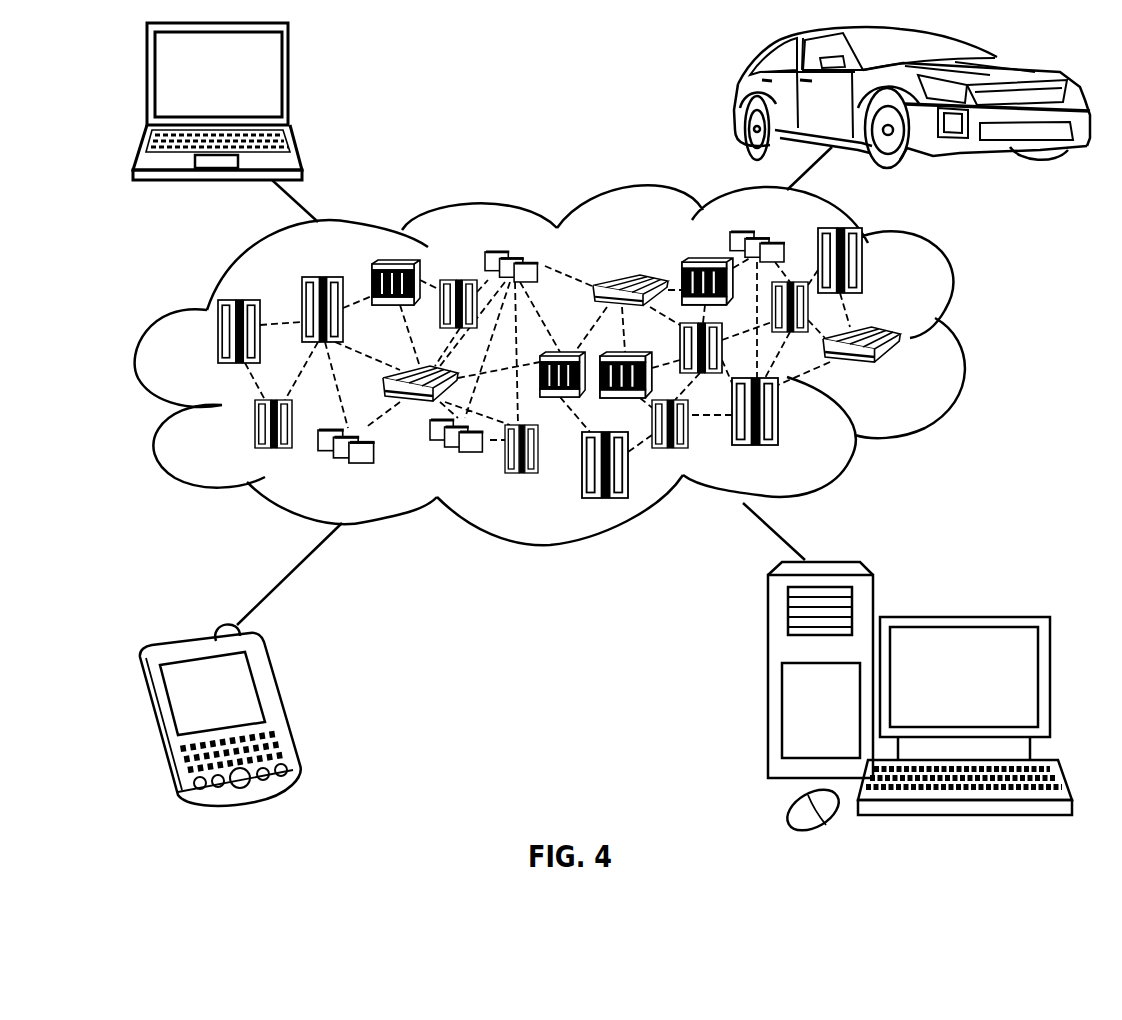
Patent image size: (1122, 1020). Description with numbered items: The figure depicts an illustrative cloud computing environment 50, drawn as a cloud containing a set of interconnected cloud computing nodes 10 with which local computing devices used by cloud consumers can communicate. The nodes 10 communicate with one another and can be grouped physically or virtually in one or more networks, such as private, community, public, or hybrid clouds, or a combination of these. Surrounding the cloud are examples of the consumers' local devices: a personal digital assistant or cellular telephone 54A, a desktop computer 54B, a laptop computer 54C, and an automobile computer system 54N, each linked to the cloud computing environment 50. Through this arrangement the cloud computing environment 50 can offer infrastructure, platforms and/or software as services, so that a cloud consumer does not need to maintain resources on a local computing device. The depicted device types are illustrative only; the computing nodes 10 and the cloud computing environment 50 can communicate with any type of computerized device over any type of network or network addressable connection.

The cloud computing nodes 10 is at (900, 368).
The cloud computing environment 50 is at (962, 343).
The personal digital assistant (PDA) or cellular telephone 54A is at (277, 703).
The desktop computer 54B is at (962, 617).
The laptop computer 54C is at (288, 83).
The automobile computer system 54N is at (738, 97).